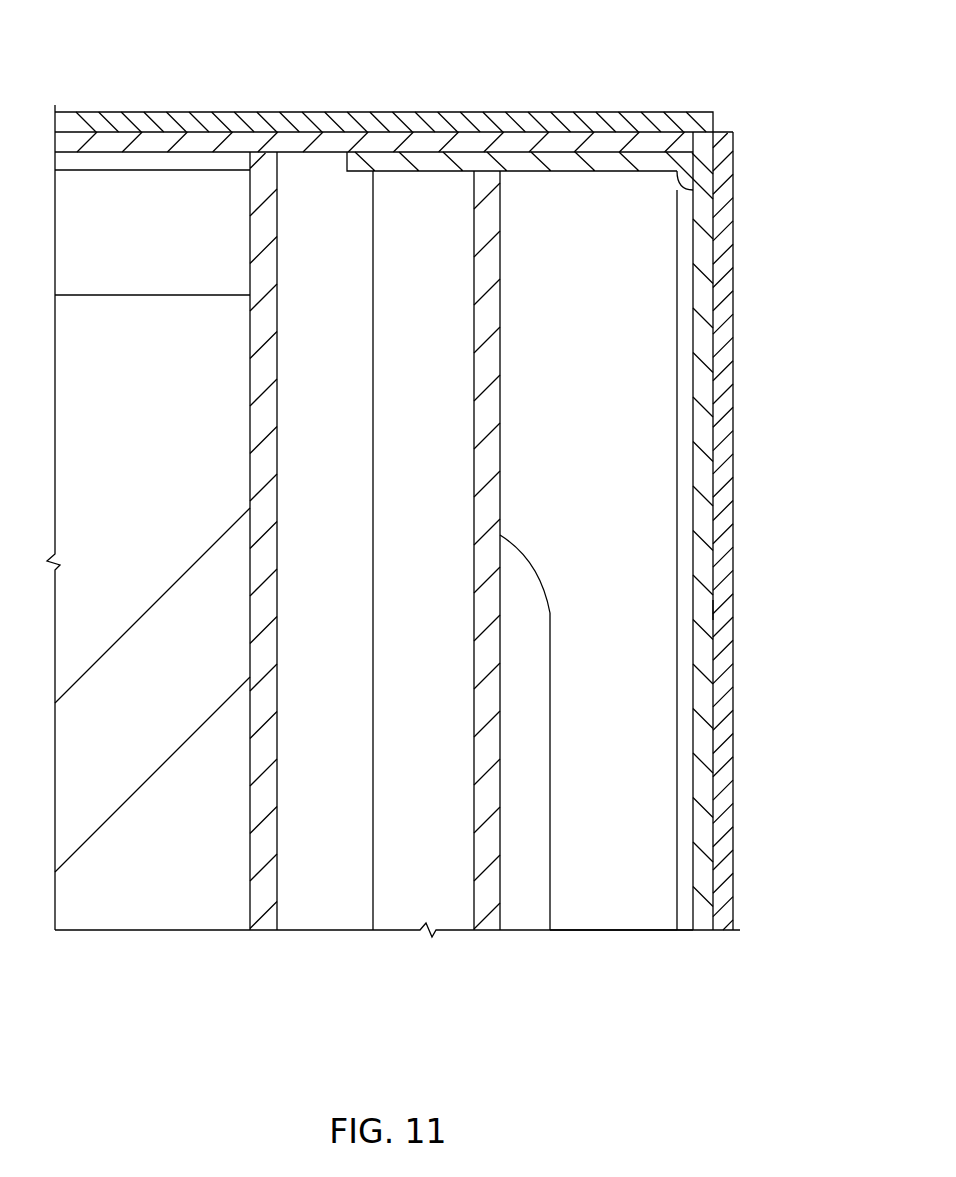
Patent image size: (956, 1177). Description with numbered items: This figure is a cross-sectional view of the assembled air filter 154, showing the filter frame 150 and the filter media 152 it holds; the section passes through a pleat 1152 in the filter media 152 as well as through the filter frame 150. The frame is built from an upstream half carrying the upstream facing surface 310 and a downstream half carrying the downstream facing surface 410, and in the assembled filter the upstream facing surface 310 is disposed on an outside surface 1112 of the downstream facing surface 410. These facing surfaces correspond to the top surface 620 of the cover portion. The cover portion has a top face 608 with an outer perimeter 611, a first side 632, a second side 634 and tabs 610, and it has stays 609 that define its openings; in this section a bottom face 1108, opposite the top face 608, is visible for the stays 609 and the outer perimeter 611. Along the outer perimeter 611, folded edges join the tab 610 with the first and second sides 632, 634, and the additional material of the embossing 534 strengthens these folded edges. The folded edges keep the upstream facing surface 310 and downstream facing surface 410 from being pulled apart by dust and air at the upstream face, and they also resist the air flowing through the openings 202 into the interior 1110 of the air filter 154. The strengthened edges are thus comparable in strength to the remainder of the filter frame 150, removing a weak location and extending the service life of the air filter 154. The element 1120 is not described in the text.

The air filter 154 is at (138, 77).
The filter frame 150 is at (570, 125).
The upstream facing surface 310 is at (392, 125).
The downstream facing surface 410 is at (290, 138).
The first side 632 is at (327, 142).
The tabs 610 is at (533, 160).
The embossing 534 is at (677, 183).
The second side 634 is at (697, 290).
The outer sleeve 1120 is at (735, 160).
The outside surface 1112 is at (715, 610).
The top surface 620 is at (673, 453).
The interior 1110 is at (673, 740).
The filter media 152 is at (450, 450).
The openings 202 is at (520, 597).
The pleat 1152 is at (392, 684).
The bottom face 1108 is at (143, 679).
The outer perimeter 611 is at (598, 679).
The top face 608 is at (142, 613).
The stays 609 is at (178, 750).